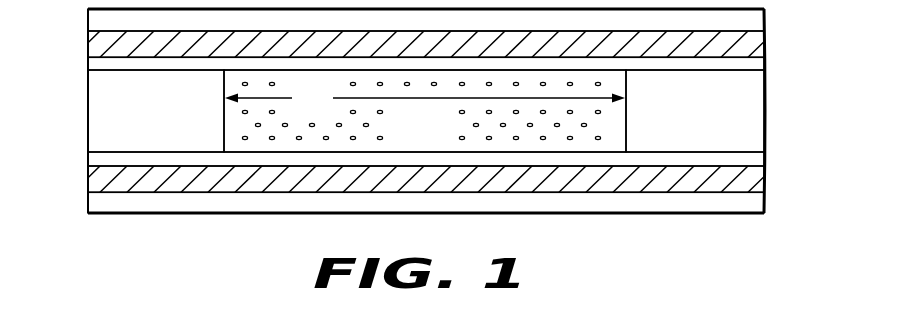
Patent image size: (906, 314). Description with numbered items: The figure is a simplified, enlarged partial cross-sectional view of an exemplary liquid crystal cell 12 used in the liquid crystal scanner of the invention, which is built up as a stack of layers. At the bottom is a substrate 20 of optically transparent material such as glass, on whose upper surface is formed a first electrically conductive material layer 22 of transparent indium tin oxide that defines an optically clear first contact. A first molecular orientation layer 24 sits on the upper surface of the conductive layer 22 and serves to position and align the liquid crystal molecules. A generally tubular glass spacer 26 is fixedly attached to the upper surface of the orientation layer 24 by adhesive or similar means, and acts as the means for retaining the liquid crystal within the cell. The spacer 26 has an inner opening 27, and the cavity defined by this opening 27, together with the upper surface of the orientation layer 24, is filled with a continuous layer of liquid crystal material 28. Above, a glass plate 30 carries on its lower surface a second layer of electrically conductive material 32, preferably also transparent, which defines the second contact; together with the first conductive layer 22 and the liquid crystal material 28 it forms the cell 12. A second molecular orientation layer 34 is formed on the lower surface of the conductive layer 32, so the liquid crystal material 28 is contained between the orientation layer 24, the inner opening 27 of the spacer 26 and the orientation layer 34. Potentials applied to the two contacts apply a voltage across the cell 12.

The liquid crystal cell 12 is at (271, 274).
The substrate 20 is at (764, 197).
The first electrically conductive material layer 22 is at (88, 182).
The first molecular orientation layer 24 is at (764, 155).
The tubular glass spacer 26 is at (170, 126).
The inner opening 27 is at (425, 98).
The liquid crystal material 28 is at (440, 138).
The glass plate 30 is at (764, 13).
The second layer of electrically conductive material 32 is at (88, 35).
The second molecular orientation layer 34 is at (764, 60).